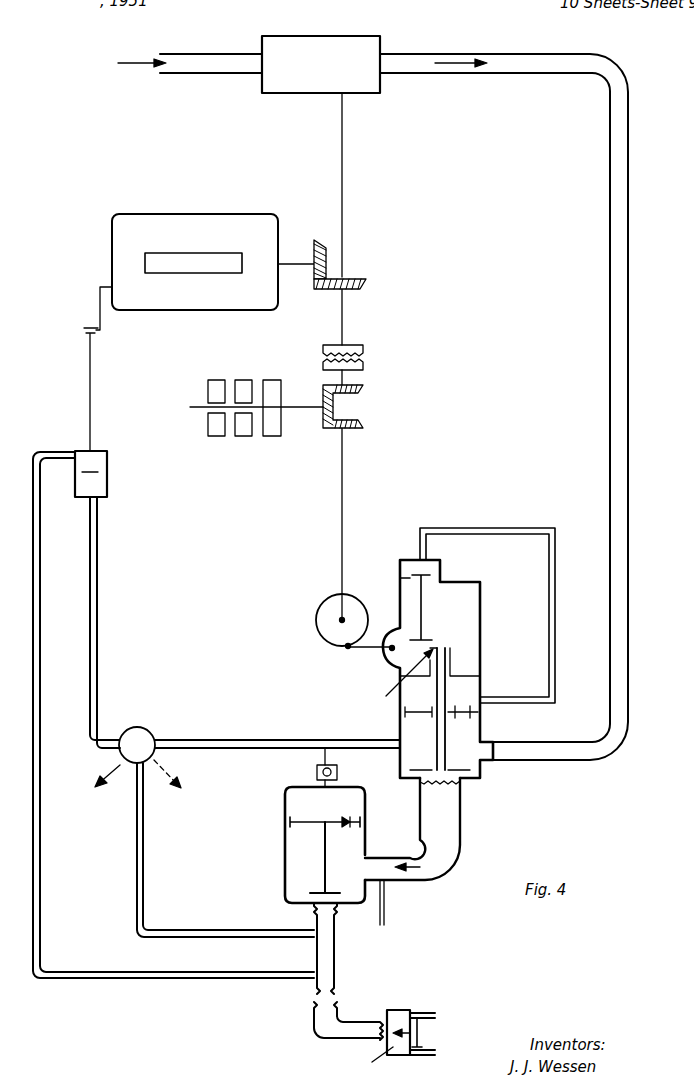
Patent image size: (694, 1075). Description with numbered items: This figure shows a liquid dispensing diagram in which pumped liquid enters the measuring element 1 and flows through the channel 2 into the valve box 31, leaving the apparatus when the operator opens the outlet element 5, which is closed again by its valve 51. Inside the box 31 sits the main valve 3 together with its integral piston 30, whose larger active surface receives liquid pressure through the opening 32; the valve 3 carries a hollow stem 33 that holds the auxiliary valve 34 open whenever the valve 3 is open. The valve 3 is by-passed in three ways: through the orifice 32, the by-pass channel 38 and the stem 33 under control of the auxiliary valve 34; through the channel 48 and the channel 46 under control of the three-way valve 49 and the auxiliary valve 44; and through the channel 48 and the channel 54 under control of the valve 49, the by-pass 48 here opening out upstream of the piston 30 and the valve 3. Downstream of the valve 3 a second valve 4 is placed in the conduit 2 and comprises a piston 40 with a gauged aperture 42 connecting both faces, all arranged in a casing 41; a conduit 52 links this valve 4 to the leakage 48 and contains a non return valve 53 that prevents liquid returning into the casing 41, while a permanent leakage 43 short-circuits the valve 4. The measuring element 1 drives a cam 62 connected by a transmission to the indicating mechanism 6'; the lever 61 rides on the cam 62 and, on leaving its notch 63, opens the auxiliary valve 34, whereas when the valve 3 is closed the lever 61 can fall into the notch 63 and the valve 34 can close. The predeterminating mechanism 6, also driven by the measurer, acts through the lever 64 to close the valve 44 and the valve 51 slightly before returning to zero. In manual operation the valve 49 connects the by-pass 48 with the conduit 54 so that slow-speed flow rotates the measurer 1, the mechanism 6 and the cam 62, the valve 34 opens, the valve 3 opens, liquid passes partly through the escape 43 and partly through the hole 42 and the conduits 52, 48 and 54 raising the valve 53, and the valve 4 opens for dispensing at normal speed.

The measuring element 1 is at (377, 43).
The channel (conduit) 2 is at (530, 70).
The main valve 3 is at (453, 783).
The second valve 4 is at (345, 874).
The element (obturator) 5 is at (410, 1012).
The predeterminating mechanism 6 is at (239, 279).
The indicating mechanism 6' is at (276, 422).
The piston 30 is at (416, 712).
The valve box 31 is at (481, 735).
The opening (orifice) 32 is at (460, 720).
The hollow stem 33 is at (397, 683).
The auxiliary valve 34 is at (425, 616).
The by-pass channel 38 is at (556, 652).
The piston 40 is at (340, 819).
The casing 41 is at (285, 868).
The gauged aperture 42 is at (345, 828).
The permanent leakage 43 is at (385, 905).
The auxiliary valve 44 is at (88, 478).
The channel 46 is at (90, 649).
The by-pass channel (leakage) 48 is at (300, 739).
The three-way valve 49 is at (130, 768).
The valve 51 is at (412, 1038).
The conduit 52 is at (312, 762).
The non return valve 53 is at (332, 782).
The channel 54 is at (136, 866).
The lever 61 is at (378, 652).
The cam 62 is at (322, 645).
The notch 63 is at (347, 652).
The lever 64 is at (100, 320).